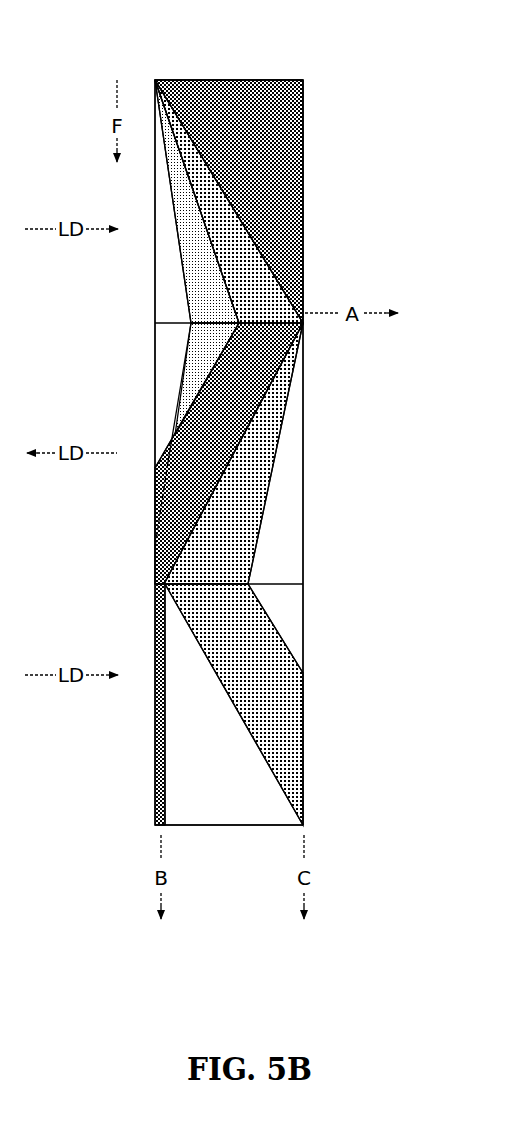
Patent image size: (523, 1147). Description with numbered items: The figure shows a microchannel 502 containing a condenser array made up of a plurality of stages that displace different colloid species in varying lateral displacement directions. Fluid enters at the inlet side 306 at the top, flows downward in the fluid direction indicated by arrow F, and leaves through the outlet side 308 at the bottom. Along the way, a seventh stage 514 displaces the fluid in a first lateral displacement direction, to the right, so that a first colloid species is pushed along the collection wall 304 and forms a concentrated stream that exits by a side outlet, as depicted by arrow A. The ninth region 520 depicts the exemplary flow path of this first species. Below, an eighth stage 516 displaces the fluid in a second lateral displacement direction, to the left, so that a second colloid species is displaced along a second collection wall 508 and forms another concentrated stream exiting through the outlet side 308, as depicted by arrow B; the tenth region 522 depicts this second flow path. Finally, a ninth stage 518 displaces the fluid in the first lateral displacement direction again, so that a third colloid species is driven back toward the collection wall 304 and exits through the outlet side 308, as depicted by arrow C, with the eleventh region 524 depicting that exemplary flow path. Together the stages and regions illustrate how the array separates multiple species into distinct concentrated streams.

The microchannel 502 is at (133, 42).
The inlet side 306 is at (251, 74).
The ninth region 520 is at (277, 169).
The seventh stage 514 is at (151, 291).
The eighth stage 516 is at (151, 396).
The tenth region 522 is at (254, 392).
The second collection wall 508 is at (151, 553).
The ninth stage 518 is at (151, 614).
The eleventh region 524 is at (256, 634).
The collection wall 304 is at (306, 714).
The outlet side 308 is at (247, 832).